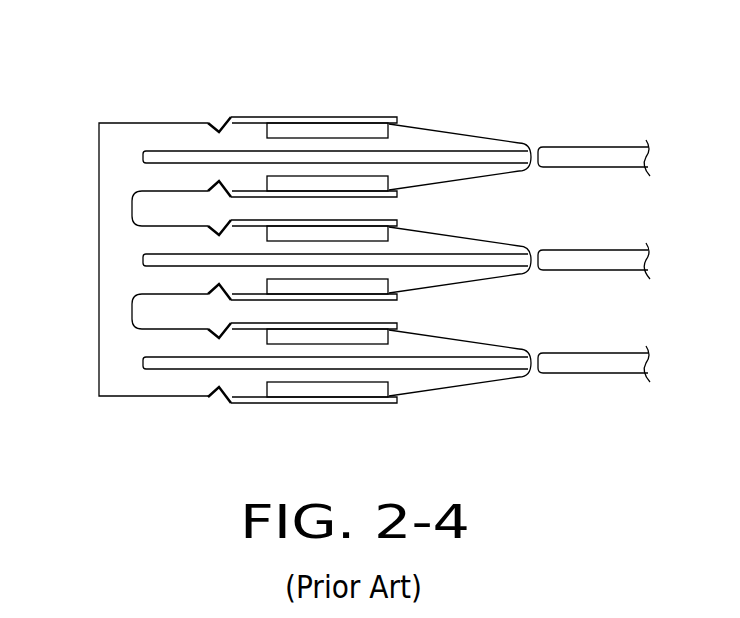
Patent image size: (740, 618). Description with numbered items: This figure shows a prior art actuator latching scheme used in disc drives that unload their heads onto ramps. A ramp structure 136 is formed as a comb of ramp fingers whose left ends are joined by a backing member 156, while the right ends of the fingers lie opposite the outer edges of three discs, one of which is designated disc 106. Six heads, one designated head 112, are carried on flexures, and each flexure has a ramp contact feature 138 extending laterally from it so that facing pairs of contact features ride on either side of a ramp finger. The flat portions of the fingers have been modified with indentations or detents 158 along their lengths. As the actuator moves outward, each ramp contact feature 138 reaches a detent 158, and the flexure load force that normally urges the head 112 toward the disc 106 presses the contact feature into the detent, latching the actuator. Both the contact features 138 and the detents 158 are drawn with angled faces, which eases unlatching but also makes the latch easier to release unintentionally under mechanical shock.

The ramp structure 136 is at (100, 92).
The backing member 156 is at (159, 122).
The ramp contact feature 138 is at (210, 121).
The detent 158 is at (236, 184).
The head 112 is at (358, 132).
The disc 106 is at (625, 162).